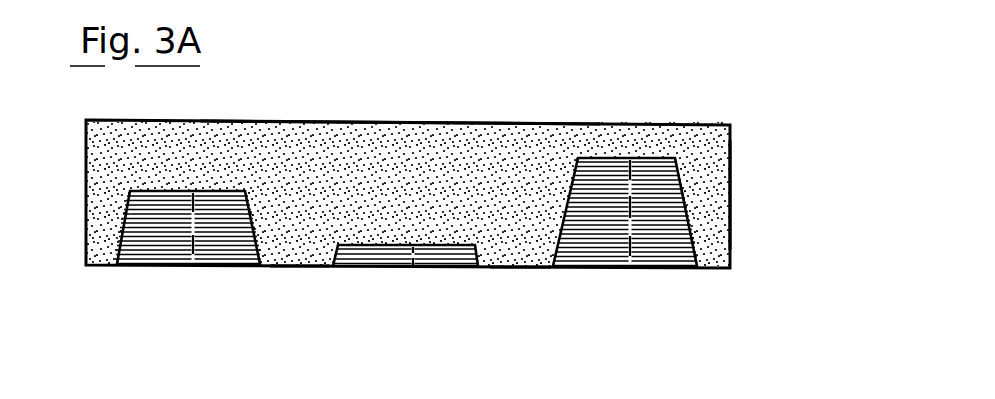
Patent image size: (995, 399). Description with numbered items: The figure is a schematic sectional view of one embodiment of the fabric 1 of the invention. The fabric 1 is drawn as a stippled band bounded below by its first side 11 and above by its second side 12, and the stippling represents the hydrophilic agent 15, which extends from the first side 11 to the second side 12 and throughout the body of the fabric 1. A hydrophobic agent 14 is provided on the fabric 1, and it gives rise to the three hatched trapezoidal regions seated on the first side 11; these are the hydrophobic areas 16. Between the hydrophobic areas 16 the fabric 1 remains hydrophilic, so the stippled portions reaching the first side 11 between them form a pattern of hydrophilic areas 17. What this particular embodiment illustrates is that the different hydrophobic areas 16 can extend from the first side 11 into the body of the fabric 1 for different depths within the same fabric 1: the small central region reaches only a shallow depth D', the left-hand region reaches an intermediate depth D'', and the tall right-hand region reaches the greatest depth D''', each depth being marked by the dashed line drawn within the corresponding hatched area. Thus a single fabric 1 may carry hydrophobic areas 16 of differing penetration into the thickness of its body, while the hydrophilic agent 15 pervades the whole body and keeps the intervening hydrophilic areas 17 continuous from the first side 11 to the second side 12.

The fabric 1 is at (624, 71).
The first side 11 is at (108, 268).
The second side 12 is at (438, 117).
The hydrophobic agent 14 is at (148, 265).
The hydrophilic agent 15 is at (733, 163).
The hydrophobic areas 16 is at (587, 276).
The hydrophilic areas 17 is at (316, 276).
The depth D' is at (407, 292).
The depth D'' is at (193, 265).
The depth D''' is at (648, 245).